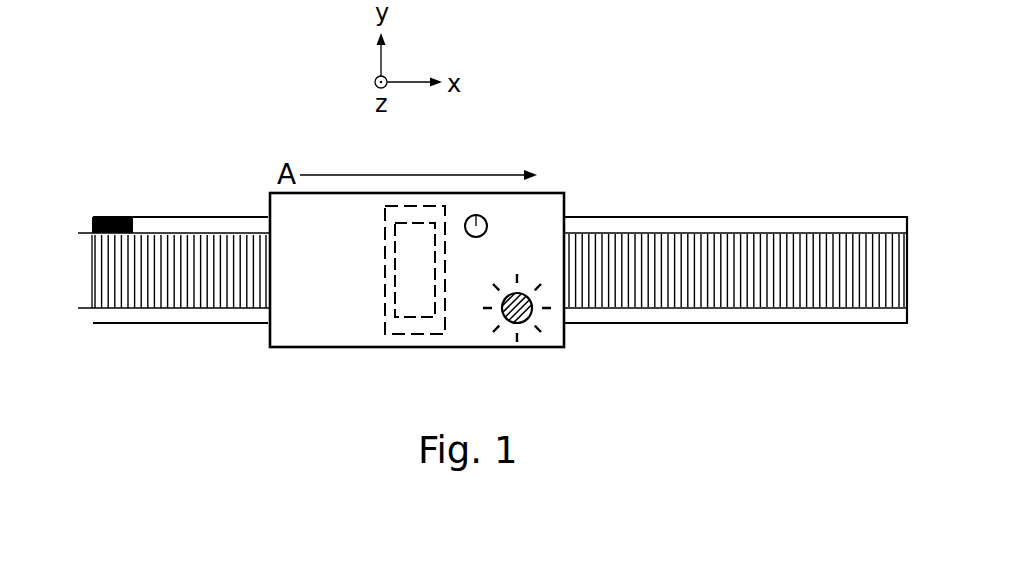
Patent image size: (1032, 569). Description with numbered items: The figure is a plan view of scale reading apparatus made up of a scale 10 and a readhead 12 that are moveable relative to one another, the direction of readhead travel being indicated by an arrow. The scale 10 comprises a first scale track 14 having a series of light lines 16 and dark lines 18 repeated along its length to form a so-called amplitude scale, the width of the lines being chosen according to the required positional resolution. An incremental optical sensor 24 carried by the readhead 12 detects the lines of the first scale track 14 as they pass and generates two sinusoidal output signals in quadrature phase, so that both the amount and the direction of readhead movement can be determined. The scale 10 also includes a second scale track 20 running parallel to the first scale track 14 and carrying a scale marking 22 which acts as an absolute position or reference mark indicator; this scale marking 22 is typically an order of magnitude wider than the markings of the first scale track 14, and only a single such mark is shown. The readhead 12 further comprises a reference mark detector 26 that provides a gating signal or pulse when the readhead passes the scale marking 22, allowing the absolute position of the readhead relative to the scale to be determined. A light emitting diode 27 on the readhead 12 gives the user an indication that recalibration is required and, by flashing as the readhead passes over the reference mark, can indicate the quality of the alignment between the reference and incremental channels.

The scale 10 is at (763, 183).
The readhead 12 is at (318, 332).
The first scale track 14 is at (88, 280).
The light lines 16 is at (105, 295).
The dark lines 18 is at (132, 295).
The second scale track 20 is at (92, 226).
The scale marking 22 is at (120, 216).
The incremental optical sensor 24 is at (413, 305).
The reference mark detector 26 is at (476, 215).
The light emitting diode 27 is at (525, 322).